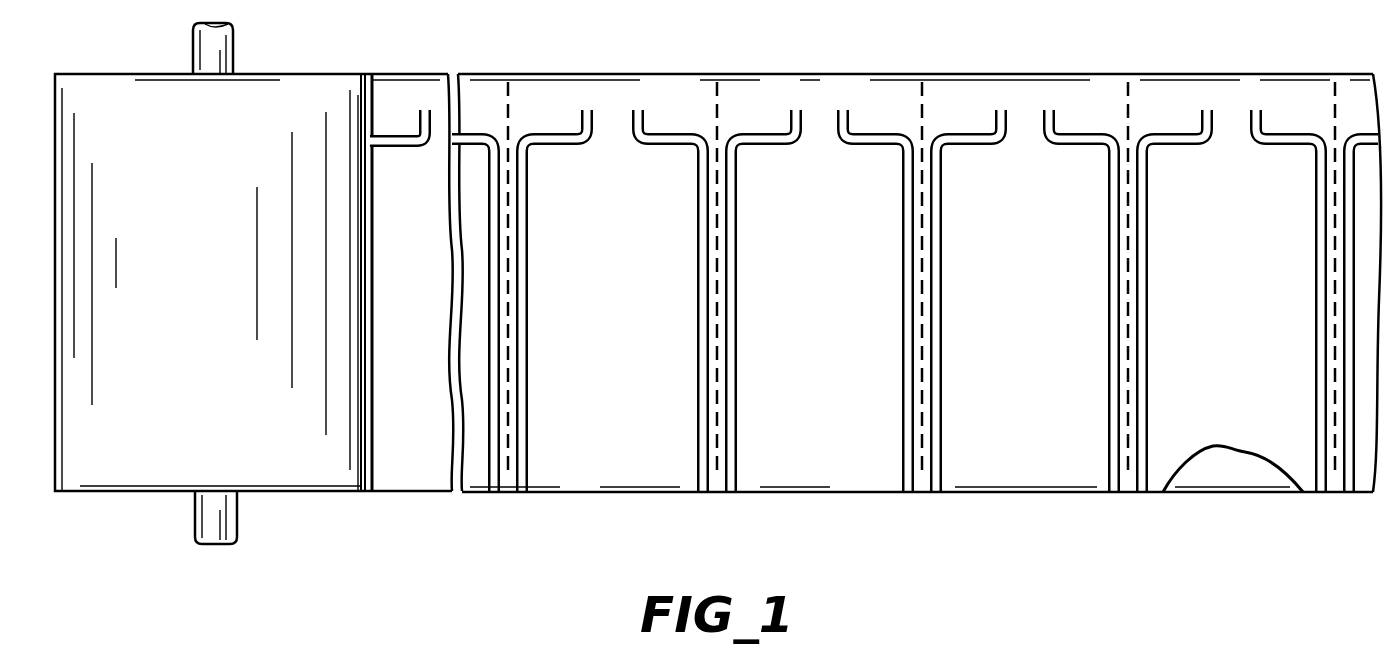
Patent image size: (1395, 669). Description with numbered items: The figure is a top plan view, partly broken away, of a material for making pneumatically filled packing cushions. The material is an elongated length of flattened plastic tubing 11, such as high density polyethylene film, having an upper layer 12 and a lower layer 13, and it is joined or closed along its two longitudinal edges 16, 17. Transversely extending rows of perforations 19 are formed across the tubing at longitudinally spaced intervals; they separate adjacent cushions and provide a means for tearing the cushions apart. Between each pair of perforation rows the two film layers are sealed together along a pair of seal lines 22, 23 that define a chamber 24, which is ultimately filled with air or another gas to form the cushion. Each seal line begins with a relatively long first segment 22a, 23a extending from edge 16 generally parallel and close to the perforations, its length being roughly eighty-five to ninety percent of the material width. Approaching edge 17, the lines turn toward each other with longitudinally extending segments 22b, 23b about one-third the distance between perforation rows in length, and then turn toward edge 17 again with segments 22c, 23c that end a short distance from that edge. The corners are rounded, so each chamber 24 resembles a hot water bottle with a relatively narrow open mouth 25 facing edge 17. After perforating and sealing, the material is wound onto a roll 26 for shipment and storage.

The flattened plastic tubing 11 is at (419, 66).
The upper layer 12 is at (1079, 455).
The lower layer 13 is at (1222, 465).
The longitudinal edge 16 is at (567, 496).
The longitudinal edge 17 is at (567, 73).
The rows of perforations 19 is at (718, 393).
The seal line 22 is at (742, 327).
The first segment 22a is at (737, 450).
The longitudinally extending segment 22b is at (760, 146).
The segment 22c is at (790, 118).
The seal line 23 is at (901, 325).
The first segment 23a is at (905, 450).
The longitudinally extending segment 23b is at (875, 146).
The segment 23c is at (846, 120).
The chamber 24 is at (1040, 368).
The open mouth 25 is at (1023, 122).
The roll 26 is at (320, 473).